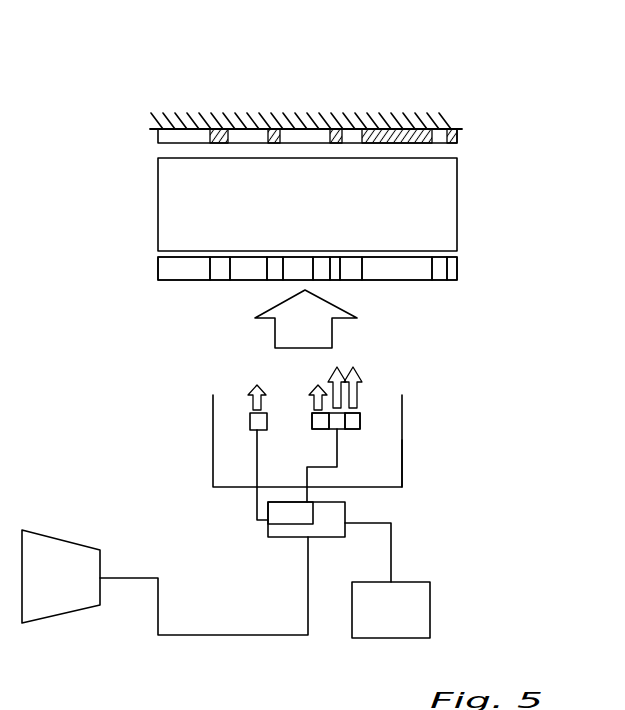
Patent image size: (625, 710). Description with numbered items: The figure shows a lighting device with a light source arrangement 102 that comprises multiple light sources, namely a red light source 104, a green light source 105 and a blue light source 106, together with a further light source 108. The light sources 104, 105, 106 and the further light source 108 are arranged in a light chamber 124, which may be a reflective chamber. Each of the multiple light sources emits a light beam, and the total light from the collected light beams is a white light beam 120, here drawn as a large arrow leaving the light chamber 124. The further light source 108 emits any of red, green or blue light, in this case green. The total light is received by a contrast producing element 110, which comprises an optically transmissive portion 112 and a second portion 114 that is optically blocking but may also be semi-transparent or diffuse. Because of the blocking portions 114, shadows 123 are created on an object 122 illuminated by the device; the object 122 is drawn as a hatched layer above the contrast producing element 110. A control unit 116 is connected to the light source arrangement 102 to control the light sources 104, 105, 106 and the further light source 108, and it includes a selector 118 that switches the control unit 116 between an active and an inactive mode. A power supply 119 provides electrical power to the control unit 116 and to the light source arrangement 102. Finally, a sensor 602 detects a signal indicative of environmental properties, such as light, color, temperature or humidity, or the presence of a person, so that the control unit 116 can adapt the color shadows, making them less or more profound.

The light source arrangement 102 is at (393, 432).
The red light source 104 is at (362, 421).
The green light source 105 is at (320, 428).
The blue light source 106 is at (358, 424).
The further light source 108 is at (252, 420).
The contrast producing element 110 is at (142, 269).
The optically transmissive portion 112 is at (220, 262).
The second portion 114 is at (170, 278).
The control unit 116 is at (328, 532).
The selector 118 is at (293, 515).
The power supply 119 is at (420, 618).
The white light beam 120 is at (170, 200).
The object 122 is at (476, 100).
The shadows 123 is at (337, 130).
The light chamber 124 is at (402, 466).
The sensor 602 is at (57, 597).